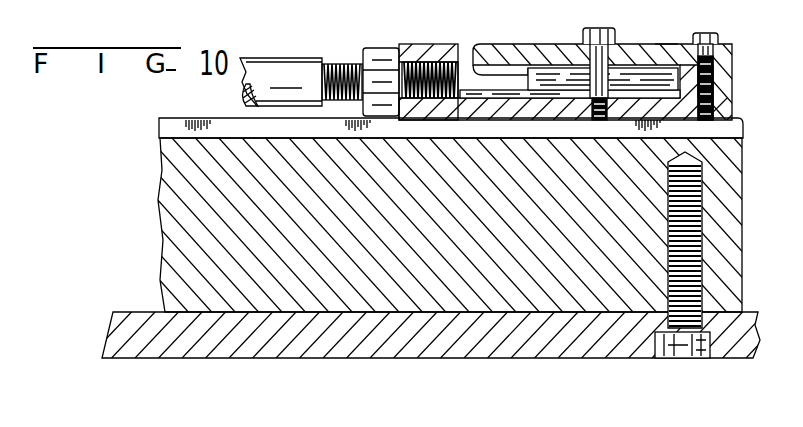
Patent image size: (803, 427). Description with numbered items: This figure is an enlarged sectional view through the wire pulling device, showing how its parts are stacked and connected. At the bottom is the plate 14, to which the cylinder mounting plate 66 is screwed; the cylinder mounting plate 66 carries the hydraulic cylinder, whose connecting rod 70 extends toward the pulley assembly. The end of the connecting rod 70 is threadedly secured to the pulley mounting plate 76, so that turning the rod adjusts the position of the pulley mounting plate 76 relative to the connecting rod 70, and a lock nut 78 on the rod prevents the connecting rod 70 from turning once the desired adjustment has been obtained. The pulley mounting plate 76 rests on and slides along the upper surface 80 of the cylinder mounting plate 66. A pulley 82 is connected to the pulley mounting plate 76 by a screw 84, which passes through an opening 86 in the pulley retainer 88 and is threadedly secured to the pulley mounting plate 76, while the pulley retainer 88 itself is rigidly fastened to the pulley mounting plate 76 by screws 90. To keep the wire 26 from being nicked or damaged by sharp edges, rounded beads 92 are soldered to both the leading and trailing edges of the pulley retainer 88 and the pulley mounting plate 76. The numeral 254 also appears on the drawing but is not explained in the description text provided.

The plate 14 is at (752, 313).
The wire 26 is at (500, 72).
The cylinder mounting plate 66 is at (170, 270).
The connecting rod 70 is at (288, 64).
The pulley mounting plate 76 is at (438, 46).
The lock nut 78 is at (376, 52).
The upper surface 80 is at (182, 118).
The pulley 82 is at (640, 62).
The screw 84 is at (602, 28).
The opening 86 is at (587, 40).
The pulley retainer 88 is at (665, 44).
The screws 90 is at (703, 33).
The rounded beads 92 is at (471, 90).
The cable assembly 254 is at (335, 51).